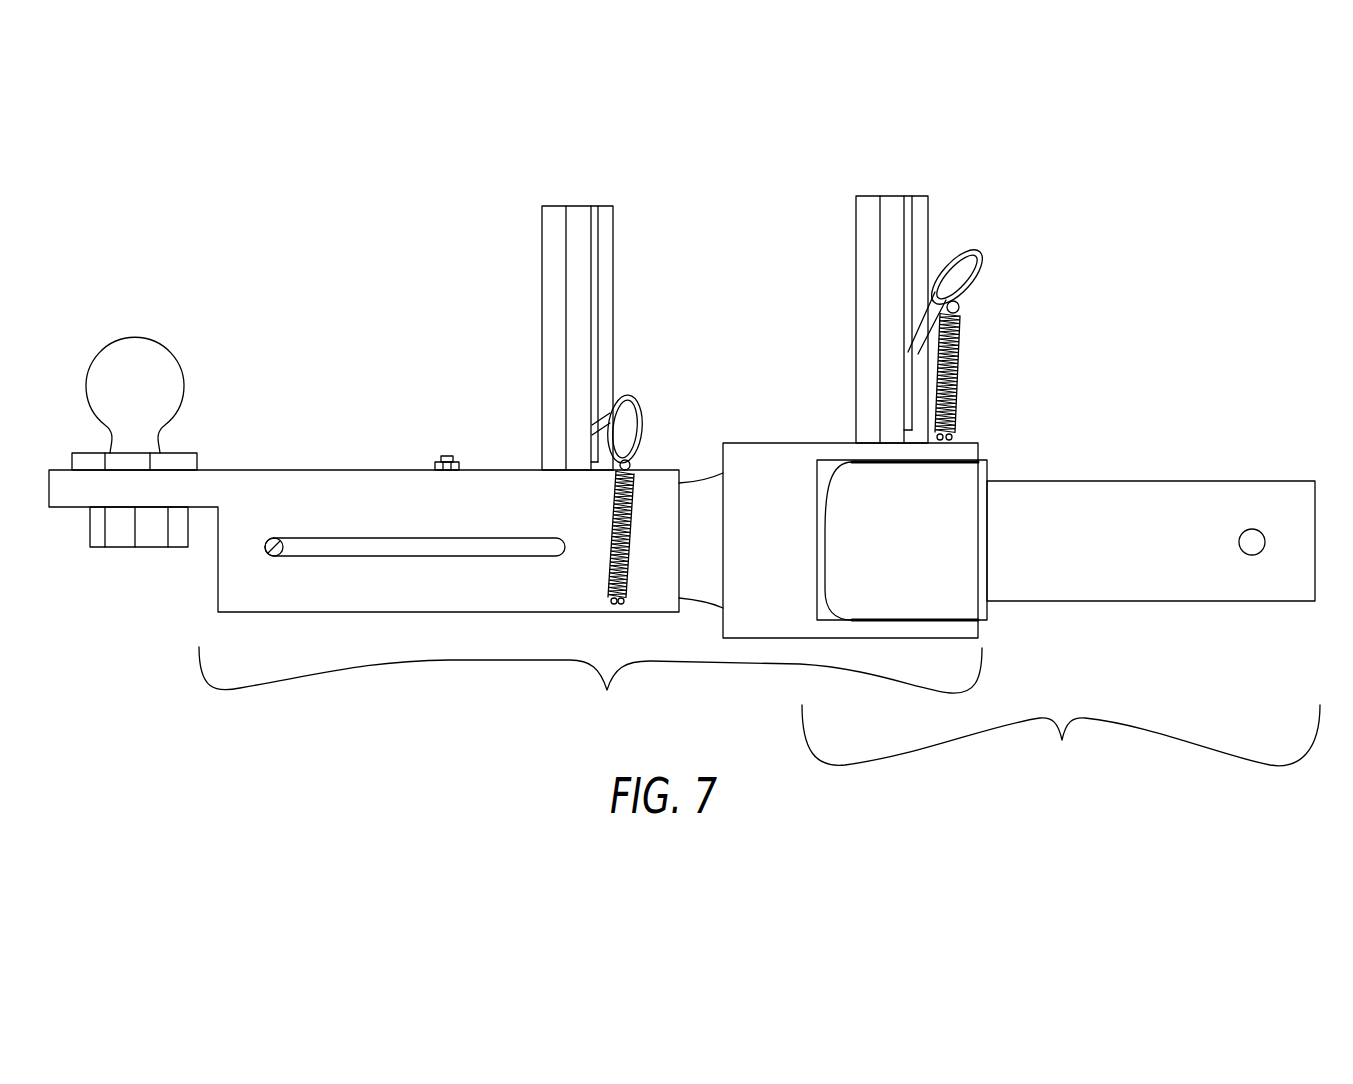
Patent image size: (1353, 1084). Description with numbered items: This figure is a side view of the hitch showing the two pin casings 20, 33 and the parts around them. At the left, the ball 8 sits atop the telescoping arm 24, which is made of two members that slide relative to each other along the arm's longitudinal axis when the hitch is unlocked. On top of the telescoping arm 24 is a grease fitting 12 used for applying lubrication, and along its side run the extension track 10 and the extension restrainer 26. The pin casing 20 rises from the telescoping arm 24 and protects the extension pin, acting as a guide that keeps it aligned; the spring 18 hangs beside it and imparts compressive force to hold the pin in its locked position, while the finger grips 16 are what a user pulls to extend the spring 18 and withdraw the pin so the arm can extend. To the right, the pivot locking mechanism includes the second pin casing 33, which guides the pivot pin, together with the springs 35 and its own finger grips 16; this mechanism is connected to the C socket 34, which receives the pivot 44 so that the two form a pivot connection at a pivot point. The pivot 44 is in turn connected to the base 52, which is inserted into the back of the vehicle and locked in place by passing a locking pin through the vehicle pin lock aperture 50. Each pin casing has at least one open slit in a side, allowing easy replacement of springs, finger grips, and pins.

The ball 8 is at (145, 363).
The extension track 10 is at (405, 545).
The grease fitting 12 is at (447, 455).
The finger grips 16 is at (640, 418).
The spring 18 is at (618, 517).
The pin casing 20 is at (548, 222).
The telescoping arm 24 is at (515, 599).
The extension restrainer 26 is at (277, 540).
The pin casing 33 is at (575, 270).
The C socket 34 is at (835, 443).
The springs 35 is at (956, 372).
The pivot 44 is at (902, 525).
The vehicle pin lock aperture 50 is at (1250, 542).
The base 52 is at (1061, 629).